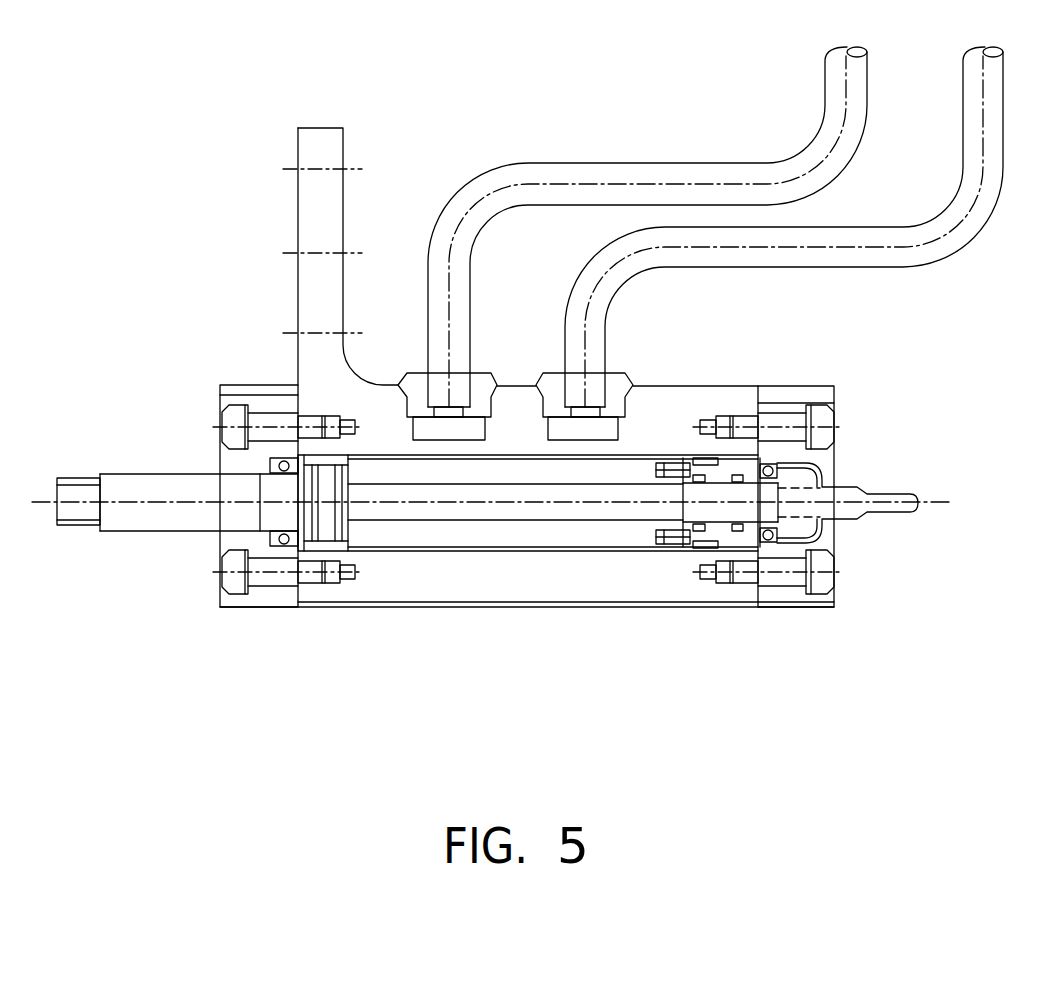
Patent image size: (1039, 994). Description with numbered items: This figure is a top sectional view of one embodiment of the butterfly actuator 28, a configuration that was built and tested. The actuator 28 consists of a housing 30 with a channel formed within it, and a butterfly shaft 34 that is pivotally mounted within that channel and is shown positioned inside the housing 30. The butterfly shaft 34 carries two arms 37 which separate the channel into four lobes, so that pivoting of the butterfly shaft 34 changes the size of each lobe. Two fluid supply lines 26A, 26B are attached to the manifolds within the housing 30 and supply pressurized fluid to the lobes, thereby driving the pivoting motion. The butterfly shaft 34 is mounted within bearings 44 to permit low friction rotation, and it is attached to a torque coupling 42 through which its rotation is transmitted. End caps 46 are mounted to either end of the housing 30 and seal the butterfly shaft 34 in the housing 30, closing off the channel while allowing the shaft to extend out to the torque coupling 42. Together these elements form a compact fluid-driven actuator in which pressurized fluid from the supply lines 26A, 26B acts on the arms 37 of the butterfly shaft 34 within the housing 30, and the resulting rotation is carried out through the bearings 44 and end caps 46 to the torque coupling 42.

The fluid supply line 26A is at (572, 168).
The fluid supply line 26B is at (927, 248).
The butterfly actuator 28 is at (491, 444).
The housing 30 is at (493, 575).
The butterfly shaft 34 is at (630, 470).
The arm 37 is at (423, 537).
The torque coupling 42 is at (136, 487).
The bearing 44 is at (769, 462).
The end cap 46 is at (792, 395).